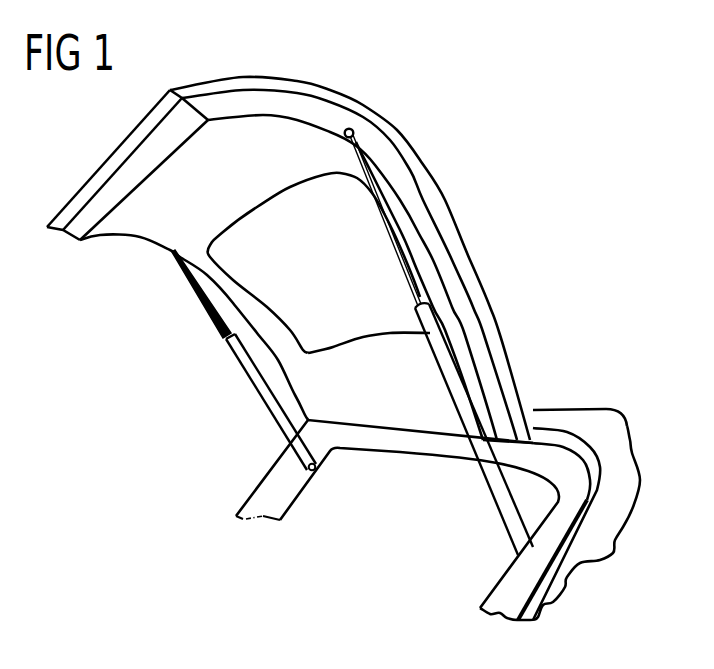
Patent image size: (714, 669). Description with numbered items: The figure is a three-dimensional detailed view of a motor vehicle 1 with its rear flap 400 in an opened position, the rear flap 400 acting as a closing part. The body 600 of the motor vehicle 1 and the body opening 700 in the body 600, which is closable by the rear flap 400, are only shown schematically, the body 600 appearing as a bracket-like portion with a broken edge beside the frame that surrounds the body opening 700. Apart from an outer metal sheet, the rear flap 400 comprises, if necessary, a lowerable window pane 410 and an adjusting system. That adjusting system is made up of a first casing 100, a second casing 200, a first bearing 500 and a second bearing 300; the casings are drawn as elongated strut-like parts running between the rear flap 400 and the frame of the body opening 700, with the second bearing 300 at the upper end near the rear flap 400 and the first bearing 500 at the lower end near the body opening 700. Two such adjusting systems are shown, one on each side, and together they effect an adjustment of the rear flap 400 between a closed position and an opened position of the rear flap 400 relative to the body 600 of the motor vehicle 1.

The motor vehicle 1 is at (571, 398).
The first casing 100 is at (256, 391).
The second casing 200 is at (214, 323).
The second bearing 300 is at (354, 129).
The rear flap 400 is at (492, 293).
The window pane 410 is at (414, 264).
The first bearing 500 is at (313, 472).
The body 600 is at (599, 420).
The body opening 700 is at (416, 531).